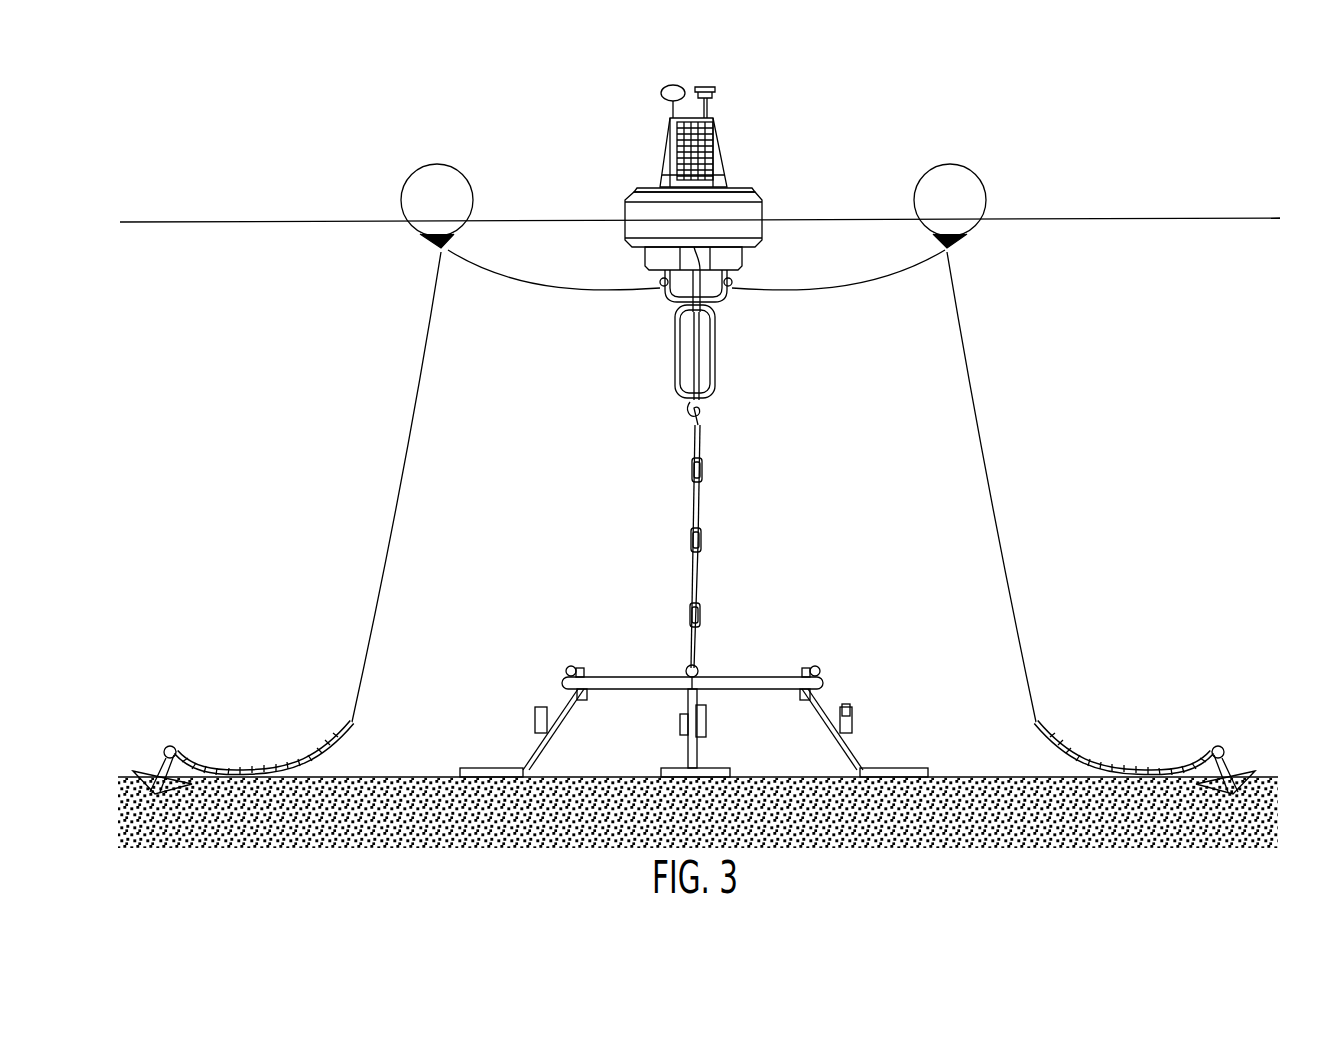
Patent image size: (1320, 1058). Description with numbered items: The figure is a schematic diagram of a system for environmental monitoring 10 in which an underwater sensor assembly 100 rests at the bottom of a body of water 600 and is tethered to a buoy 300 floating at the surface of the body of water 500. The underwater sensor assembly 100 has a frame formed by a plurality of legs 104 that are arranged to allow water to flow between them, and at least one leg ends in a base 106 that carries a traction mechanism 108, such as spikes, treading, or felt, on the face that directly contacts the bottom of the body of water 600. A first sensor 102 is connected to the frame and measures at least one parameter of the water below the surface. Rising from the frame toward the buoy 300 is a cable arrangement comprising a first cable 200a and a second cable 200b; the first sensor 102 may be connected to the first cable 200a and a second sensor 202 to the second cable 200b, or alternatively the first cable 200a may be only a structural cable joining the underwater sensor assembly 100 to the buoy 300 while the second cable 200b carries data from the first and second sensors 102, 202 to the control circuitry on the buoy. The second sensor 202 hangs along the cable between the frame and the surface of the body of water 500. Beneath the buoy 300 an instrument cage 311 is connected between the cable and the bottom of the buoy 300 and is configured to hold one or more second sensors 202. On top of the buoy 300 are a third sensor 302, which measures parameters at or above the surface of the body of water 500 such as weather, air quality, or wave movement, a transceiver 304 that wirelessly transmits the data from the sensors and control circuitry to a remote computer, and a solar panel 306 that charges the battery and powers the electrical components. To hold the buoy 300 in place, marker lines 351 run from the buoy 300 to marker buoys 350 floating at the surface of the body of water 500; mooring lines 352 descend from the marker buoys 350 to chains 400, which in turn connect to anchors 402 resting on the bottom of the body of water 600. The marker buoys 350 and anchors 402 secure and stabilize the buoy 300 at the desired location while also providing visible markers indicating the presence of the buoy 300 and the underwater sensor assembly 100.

The system for environmental monitoring 10 is at (985, 103).
The underwater sensor assembly 100 is at (719, 691).
The first sensor 102 is at (706, 715).
The legs 104 is at (688, 744).
The base 106 is at (930, 770).
The traction mechanism 108 is at (730, 782).
The first cable 200a is at (692, 572).
The second cable 200b is at (700, 505).
The second sensor 202 is at (702, 470).
The buoy 300 is at (744, 188).
The third sensor 302 is at (716, 90).
The transceiver 304 is at (662, 90).
The solar panel 306 is at (713, 140).
The instrument cage 311 is at (715, 350).
The marker buoys 350 is at (408, 178).
The marker lines 351 is at (540, 278).
The mooring lines 352 is at (414, 428).
The chains 400 is at (318, 758).
The anchors 402 is at (146, 768).
The surface of the body of water 500 is at (222, 221).
The bottom of the body of water 600 is at (405, 776).